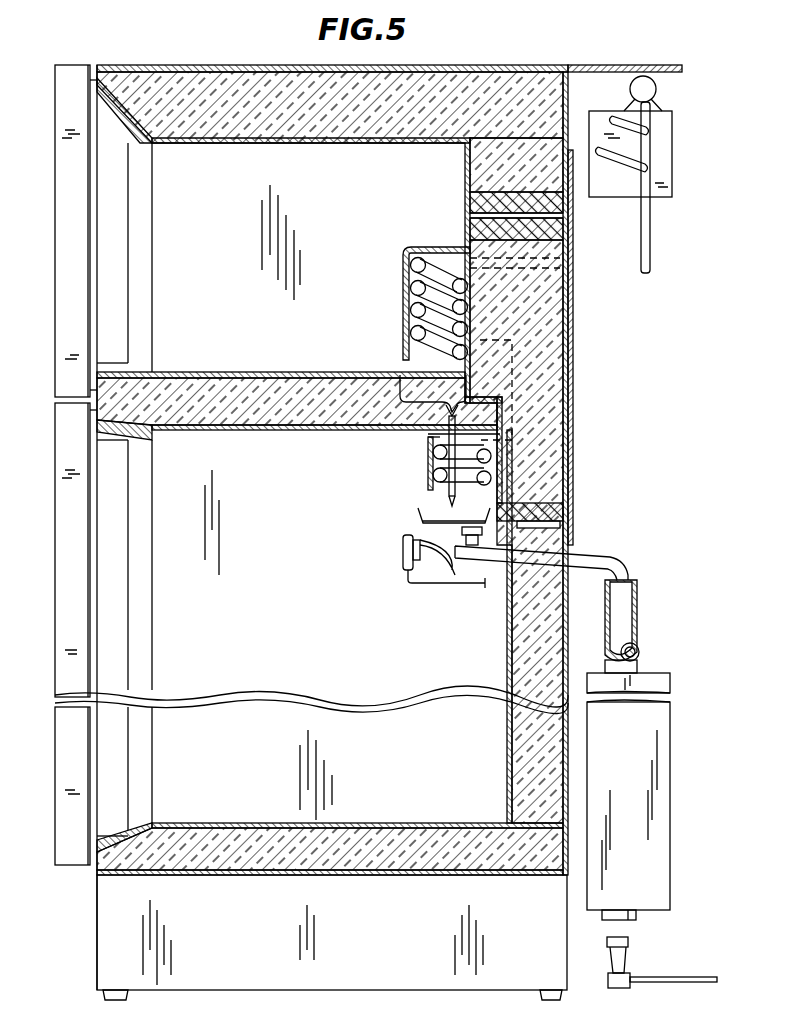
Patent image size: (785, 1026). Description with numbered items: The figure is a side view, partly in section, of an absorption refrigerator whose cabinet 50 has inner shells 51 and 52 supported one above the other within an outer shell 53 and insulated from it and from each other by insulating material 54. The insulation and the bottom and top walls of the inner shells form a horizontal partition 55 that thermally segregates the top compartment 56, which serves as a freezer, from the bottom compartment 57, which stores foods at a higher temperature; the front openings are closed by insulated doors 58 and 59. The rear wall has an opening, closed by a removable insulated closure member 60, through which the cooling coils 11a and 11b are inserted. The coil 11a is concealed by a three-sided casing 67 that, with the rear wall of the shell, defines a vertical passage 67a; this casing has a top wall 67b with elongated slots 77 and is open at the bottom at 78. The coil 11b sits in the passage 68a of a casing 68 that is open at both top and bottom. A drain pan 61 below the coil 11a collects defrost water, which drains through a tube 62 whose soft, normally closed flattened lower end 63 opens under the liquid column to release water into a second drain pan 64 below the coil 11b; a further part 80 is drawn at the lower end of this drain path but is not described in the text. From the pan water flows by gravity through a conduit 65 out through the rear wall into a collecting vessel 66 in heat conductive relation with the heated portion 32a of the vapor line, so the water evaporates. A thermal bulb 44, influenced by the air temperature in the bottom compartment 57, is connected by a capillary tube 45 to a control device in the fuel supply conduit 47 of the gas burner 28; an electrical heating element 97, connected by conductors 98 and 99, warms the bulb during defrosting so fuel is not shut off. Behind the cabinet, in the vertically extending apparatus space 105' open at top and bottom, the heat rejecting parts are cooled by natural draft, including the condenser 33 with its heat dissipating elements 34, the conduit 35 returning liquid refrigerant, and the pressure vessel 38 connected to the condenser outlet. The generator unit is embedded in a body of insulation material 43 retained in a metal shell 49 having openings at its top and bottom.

The cabinet 50 is at (476, 60).
The outer shell 53 is at (560, 66).
The inner shell 51 is at (205, 145).
The insulating material 54 is at (478, 158).
The top compartment 56 is at (323, 192).
The bottom compartment 57 is at (303, 580).
The insulated door 58 is at (56, 262).
The insulated door 59 is at (56, 560).
The horizontal partition 55 is at (222, 352).
The inner shell 52 is at (222, 432).
The insulated closure member 60 is at (568, 310).
The apparatus space 105' is at (601, 397).
The three-sided casing 67 is at (412, 286).
The passage 67a is at (416, 360).
The top wall 67b is at (466, 247).
The elongated slots 77 is at (428, 242).
The open bottom 78 is at (448, 352).
The cooling coil 11a is at (410, 266).
The cooling coil 11b is at (432, 474).
The drain pan 61 is at (436, 392).
The three-sided casing 68 is at (427, 462).
The passage 68a is at (428, 440).
The tube 62 is at (436, 463).
The drain nozzle 80 is at (463, 497).
The flattened lower end 63 is at (448, 501).
The second drain pan 64 is at (430, 521).
The thermal bulb 44 is at (402, 550).
The electrical heating element 97 is at (412, 563).
The conductor 98 is at (455, 566).
The conductor 99 is at (422, 583).
The capillary tube 45 is at (470, 588).
The conduit 65 is at (600, 556).
The collecting vessel 66 is at (640, 611).
The portion of vapor line 32a is at (641, 652).
The pressure vessel 38 is at (656, 92).
The condenser 33 is at (652, 133).
The heat dissipating elements 34 is at (672, 168).
The conduit 35 is at (650, 255).
The body of insulation material 43 is at (640, 767).
The metal shell 49 is at (672, 728).
The gas burner 28 is at (633, 965).
The fuel supply conduit 47 is at (698, 983).